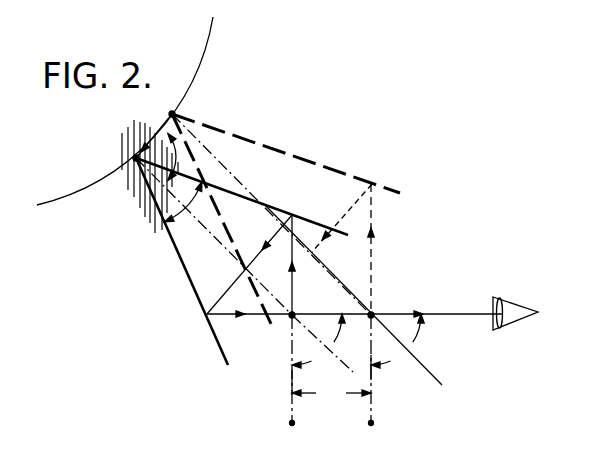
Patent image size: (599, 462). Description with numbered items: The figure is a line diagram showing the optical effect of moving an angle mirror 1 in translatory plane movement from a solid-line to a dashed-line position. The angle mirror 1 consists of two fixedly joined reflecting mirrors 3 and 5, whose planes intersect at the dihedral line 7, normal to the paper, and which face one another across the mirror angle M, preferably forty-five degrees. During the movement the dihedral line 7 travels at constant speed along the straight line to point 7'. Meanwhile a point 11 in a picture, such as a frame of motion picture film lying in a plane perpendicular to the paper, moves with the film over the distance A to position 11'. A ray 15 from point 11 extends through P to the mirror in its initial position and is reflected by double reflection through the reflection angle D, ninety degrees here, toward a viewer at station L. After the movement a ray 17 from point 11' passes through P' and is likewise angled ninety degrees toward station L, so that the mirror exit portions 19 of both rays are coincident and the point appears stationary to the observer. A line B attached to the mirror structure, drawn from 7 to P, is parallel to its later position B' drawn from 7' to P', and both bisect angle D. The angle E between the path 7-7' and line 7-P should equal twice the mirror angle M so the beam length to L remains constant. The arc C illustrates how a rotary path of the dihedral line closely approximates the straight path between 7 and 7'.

The angle mirror 1 is at (163, 233).
The reflecting mirror 3 is at (247, 199).
The reflecting mirror 5 is at (187, 272).
The dihedral line 7 is at (140, 137).
The displaced dihedral line point 7' is at (273, 213).
The point 11 is at (278, 377).
The displaced point 11' is at (388, 379).
The ray 15 is at (291, 380).
The ray 17 is at (373, 367).
The mirror exit portions 19 is at (398, 313).
The arc C is at (209, 31).
The angle E is at (152, 138).
The mirror angle M is at (183, 202).
The line attached to the mirror structure B is at (214, 236).
The displaced line B' is at (271, 214).
The point P is at (303, 266).
The point P' is at (383, 251).
The reflection angle D is at (358, 343).
The distance A is at (331, 393).
The station L is at (505, 310).